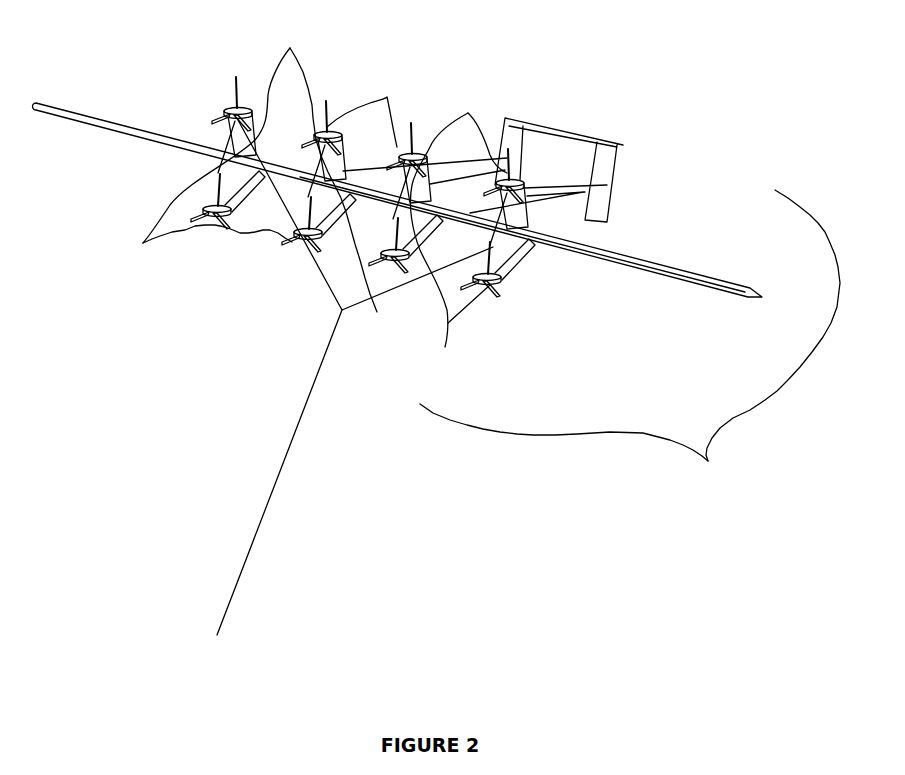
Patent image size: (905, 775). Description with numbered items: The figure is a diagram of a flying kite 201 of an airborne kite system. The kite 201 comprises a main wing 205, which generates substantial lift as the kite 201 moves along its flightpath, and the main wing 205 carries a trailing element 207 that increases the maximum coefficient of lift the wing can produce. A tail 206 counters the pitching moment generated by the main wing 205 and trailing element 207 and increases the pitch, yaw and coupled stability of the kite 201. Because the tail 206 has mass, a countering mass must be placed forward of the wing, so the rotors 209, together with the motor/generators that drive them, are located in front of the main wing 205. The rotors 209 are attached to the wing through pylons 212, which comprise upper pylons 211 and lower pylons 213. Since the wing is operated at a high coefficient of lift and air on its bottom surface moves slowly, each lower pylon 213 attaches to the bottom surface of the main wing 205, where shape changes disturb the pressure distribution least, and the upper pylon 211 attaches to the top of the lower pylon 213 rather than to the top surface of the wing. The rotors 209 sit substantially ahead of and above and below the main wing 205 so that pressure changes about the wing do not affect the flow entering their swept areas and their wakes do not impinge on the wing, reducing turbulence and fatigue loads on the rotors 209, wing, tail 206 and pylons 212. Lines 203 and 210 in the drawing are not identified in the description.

The kite 201 is at (630, 335).
The fuselage 203 is at (292, 450).
The main wing 205 is at (119, 124).
The tail 206 is at (557, 128).
The trailing element 207 is at (762, 297).
The rotors 209 is at (545, 322).
The pylons 210 is at (337, 298).
The upper pylons 211 is at (226, 135).
The pylons 212 is at (305, 200).
The lower pylons 213 is at (230, 204).